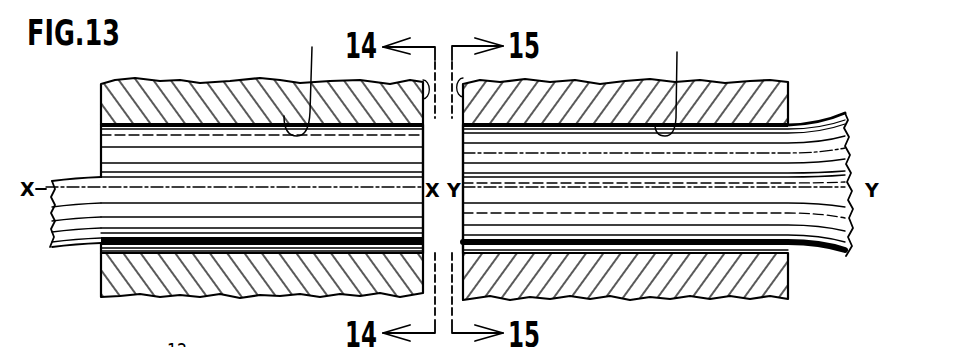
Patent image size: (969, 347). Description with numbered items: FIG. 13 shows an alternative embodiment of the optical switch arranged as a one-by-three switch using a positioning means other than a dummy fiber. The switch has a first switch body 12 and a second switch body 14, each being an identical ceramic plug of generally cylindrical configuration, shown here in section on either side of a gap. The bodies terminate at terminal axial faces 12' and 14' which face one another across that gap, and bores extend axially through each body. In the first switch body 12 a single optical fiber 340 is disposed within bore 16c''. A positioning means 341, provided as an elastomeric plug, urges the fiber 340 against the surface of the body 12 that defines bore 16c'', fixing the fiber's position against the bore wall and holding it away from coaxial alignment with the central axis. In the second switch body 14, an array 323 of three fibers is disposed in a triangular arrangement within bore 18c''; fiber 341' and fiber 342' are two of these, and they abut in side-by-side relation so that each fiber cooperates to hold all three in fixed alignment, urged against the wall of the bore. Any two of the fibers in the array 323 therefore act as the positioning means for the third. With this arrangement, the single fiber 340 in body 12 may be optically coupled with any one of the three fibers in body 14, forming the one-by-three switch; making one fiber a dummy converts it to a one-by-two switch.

The first switch body 12 is at (262, 81).
The second switch body 14 is at (625, 79).
The terminal axial face 12' is at (412, 78).
The terminal axial face 14' is at (481, 76).
The bore 16c'' is at (306, 81).
The bore 18c'' is at (677, 83).
The positioning means 341 is at (225, 145).
The fiber 341' is at (654, 109).
The optical fiber 340 is at (62, 246).
The array of fibers 323 is at (822, 112).
The fiber 342' is at (860, 170).